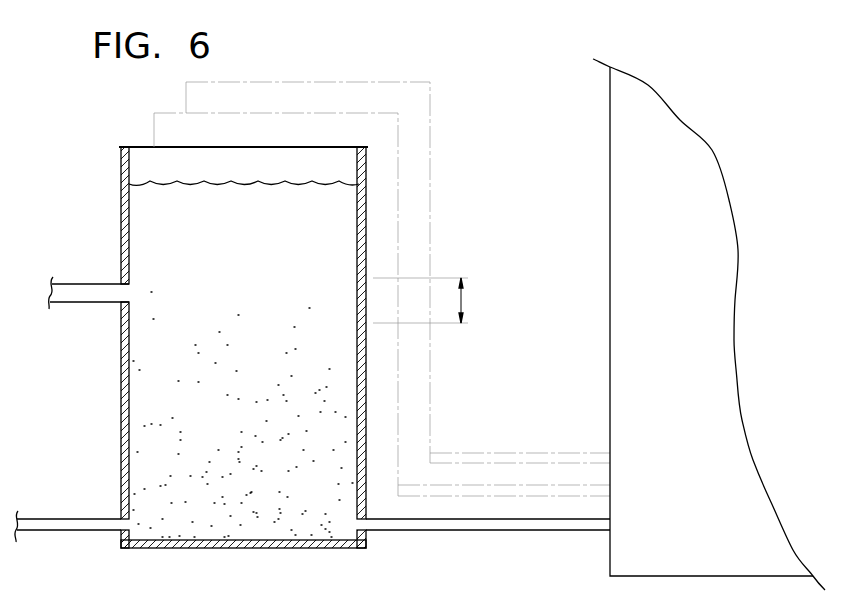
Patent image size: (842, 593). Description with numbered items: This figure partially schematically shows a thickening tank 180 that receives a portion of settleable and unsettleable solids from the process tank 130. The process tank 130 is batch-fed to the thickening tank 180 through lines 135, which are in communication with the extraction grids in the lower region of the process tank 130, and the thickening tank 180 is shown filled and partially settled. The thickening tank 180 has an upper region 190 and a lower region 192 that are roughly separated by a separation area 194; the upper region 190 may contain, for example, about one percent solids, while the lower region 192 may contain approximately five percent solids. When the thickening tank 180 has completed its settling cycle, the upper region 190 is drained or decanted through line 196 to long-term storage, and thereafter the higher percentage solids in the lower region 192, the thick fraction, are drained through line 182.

The process tank 130 is at (633, 240).
The lines 135 is at (513, 485).
The thickening tank 180 is at (124, 390).
The line 182 is at (68, 520).
The upper region 190 is at (158, 232).
The lower region 192 is at (150, 492).
The separation area 194 is at (462, 300).
The line 196 is at (78, 298).